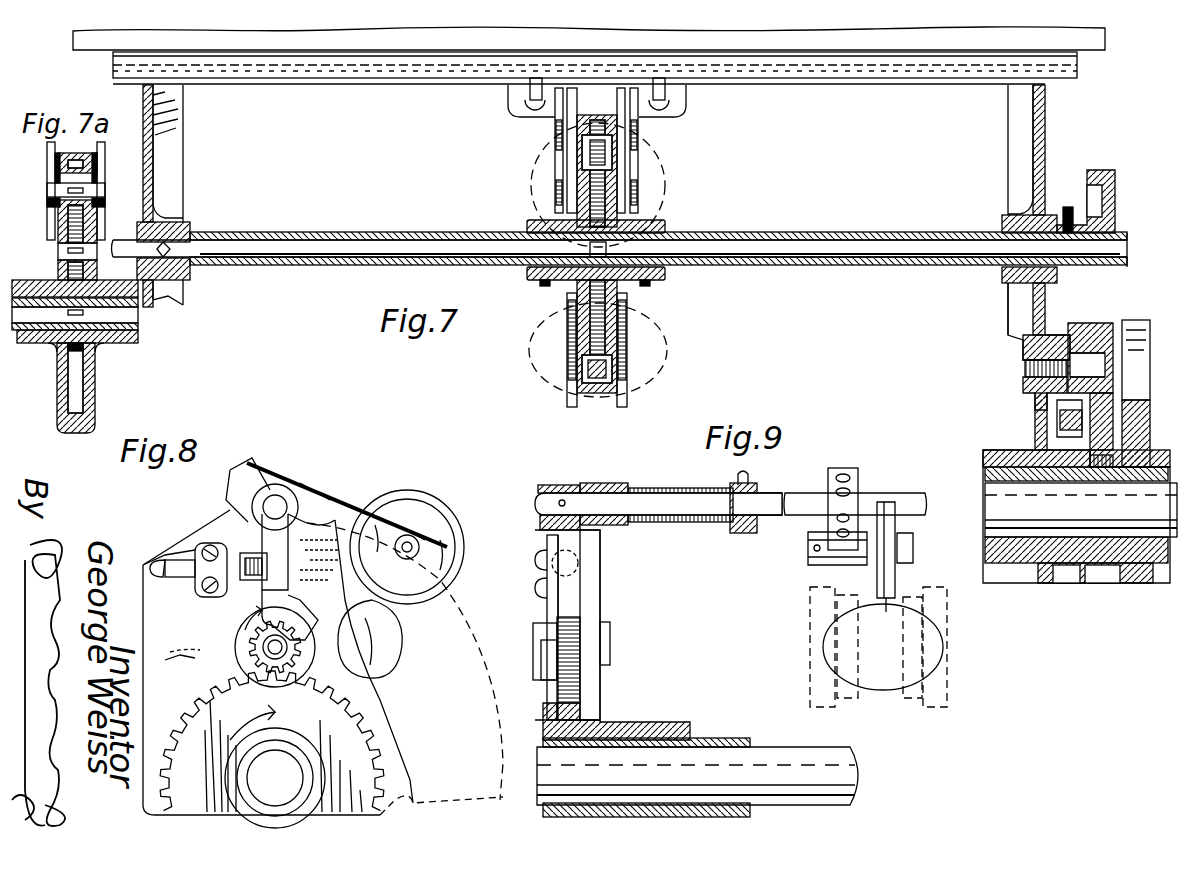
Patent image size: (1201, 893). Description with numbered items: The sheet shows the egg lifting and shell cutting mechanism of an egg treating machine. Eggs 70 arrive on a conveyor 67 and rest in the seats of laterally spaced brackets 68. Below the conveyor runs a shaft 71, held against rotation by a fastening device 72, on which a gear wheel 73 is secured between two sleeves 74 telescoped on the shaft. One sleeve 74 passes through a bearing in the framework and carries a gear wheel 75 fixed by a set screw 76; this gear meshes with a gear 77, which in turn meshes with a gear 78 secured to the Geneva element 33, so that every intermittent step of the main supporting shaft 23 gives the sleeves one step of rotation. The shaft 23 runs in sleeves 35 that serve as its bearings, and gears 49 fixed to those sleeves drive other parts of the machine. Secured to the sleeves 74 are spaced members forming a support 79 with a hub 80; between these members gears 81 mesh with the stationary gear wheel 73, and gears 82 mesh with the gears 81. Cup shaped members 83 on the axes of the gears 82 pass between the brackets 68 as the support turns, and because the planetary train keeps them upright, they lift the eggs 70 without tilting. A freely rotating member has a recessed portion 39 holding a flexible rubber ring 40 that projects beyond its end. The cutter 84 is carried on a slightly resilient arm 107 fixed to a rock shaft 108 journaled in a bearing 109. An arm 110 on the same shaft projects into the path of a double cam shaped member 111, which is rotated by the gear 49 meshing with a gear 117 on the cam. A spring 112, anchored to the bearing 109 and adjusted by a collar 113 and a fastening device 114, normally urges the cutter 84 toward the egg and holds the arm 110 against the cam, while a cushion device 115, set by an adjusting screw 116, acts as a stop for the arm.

In FIG. 7, the main supporting shaft 23 is at (1000, 512).
In FIG. 8, the main supporting shaft 23 is at (275, 778).
In FIG. 9, the main supporting shaft 23 is at (800, 750).
In FIG. 7, the Geneva element 33 is at (1136, 398).
In FIG. 7, the sleeve 35 is at (985, 477).
In FIG. 9, the sleeve 35 is at (725, 738).
In FIG. 9, the recessed portion 39 is at (810, 602).
In FIG. 9, the ring 40 is at (850, 597).
In FIG. 7, the gear 49 is at (1090, 425).
In FIG. 8, the gear 49 is at (200, 700).
In FIG. 9, the gear 49 is at (557, 690).
In FIG. 7, the conveyor 67 is at (880, 52).
In FIG. 7, the bracket 68 is at (555, 110).
In FIG. 7, the egg 70 is at (664, 175).
In FIG. 8, the egg 70 is at (400, 660).
In FIG. 9, the egg 70 is at (943, 637).
In FIG. 7, the shaft 71 is at (866, 240).
In FIG. 7A, the shaft 71 is at (138, 314).
In FIG. 7, the fastening device 72 is at (184, 230).
In FIG. 7, the gear wheel 73 is at (620, 245).
In FIG. 7A, the gear wheel 73 is at (96, 350).
In FIG. 7, the sleeve 74 is at (400, 232).
In FIG. 7A, the sleeve 74 is at (140, 326).
In FIG. 7, the gear wheel 75 is at (1113, 172).
In FIG. 7, the set screw 76 is at (1068, 207).
In FIG. 7, the gear 77 is at (1110, 325).
In FIG. 7, the gear 78 is at (1060, 420).
In FIG. 7, the support 79 is at (590, 125).
In FIG. 7A, the support 79 is at (96, 372).
In FIG. 7, the hub 80 is at (540, 225).
In FIG. 7A, the hub 80 is at (45, 343).
In FIG. 7, the gear 81 is at (638, 218).
In FIG. 7A, the gear 81 is at (60, 270).
In FIG. 7, the gear 82 is at (614, 150).
In FIG. 7A, the gear 82 is at (97, 172).
In FIG. 7, the cup shaped member 83 is at (620, 100).
In FIG. 7A, the cup shaped member 83 is at (105, 150).
In FIG. 8, the cutter 84 is at (440, 510).
In FIG. 9, the cutter 84 is at (897, 580).
In FIG. 8, the arm 107 is at (355, 506).
In FIG. 9, the arm 107 is at (858, 490).
In FIG. 8, the rock shaft 108 is at (278, 505).
In FIG. 9, the rock shaft 108 is at (802, 493).
In FIG. 9, the bearing 109 is at (610, 478).
In FIG. 8, the arm 110 is at (290, 545).
In FIG. 9, the arm 110 is at (550, 486).
In FIG. 8, the double cam shaped member 111 is at (240, 640).
In FIG. 9, the double cam shaped member 111 is at (542, 665).
In FIG. 9, the spring 112 is at (685, 484).
In FIG. 9, the collar 113 is at (742, 533).
In FIG. 9, the fastening device 114 is at (746, 478).
In FIG. 8, the cushion device 115 is at (262, 545).
In FIG. 8, the adjusting screw 116 is at (175, 560).
In FIG. 9, the adjusting screw 116 is at (580, 560).
In FIG. 8, the gear 117 is at (247, 660).
In FIG. 9, the gear 117 is at (570, 615).